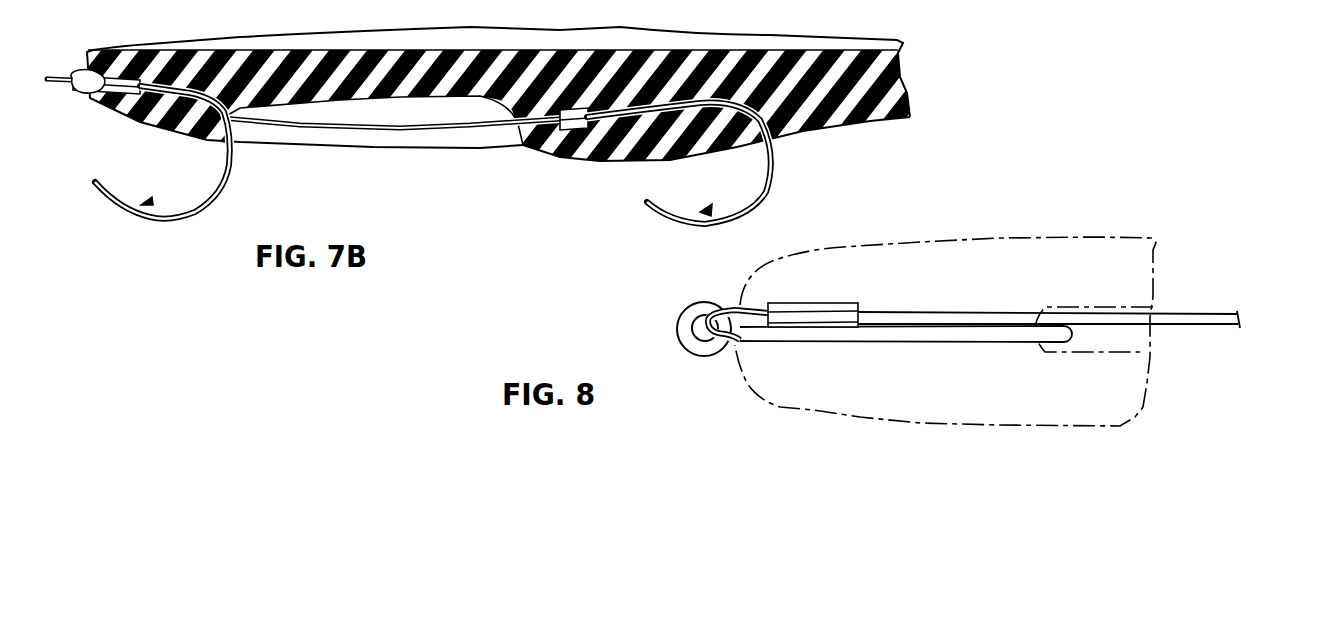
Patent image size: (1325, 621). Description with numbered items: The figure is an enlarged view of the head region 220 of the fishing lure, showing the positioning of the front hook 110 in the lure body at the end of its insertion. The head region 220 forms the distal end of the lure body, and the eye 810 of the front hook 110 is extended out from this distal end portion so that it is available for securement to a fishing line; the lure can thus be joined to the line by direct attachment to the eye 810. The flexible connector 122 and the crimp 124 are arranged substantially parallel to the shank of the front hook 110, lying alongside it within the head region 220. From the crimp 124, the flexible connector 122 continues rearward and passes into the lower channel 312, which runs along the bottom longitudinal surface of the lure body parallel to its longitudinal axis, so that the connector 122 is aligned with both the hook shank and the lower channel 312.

The front hook 110 is at (962, 342).
The flexible connector 122 is at (1200, 313).
The crimp 124 is at (845, 300).
The head region 220 is at (847, 247).
The lower channel 312 is at (1130, 338).
The eye 810 is at (673, 305).